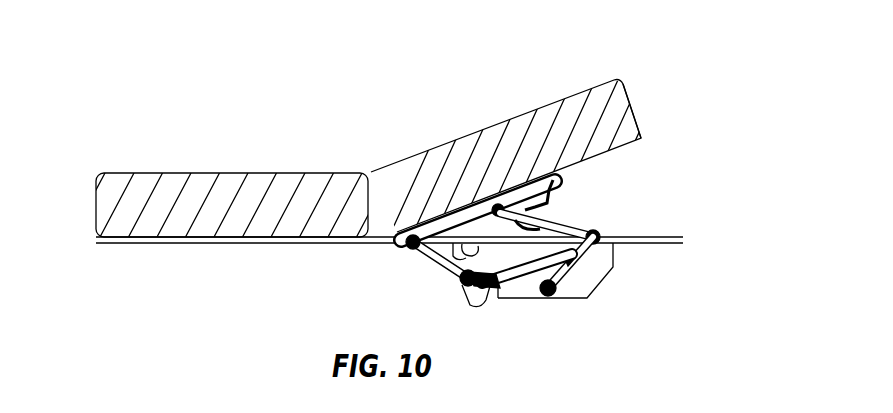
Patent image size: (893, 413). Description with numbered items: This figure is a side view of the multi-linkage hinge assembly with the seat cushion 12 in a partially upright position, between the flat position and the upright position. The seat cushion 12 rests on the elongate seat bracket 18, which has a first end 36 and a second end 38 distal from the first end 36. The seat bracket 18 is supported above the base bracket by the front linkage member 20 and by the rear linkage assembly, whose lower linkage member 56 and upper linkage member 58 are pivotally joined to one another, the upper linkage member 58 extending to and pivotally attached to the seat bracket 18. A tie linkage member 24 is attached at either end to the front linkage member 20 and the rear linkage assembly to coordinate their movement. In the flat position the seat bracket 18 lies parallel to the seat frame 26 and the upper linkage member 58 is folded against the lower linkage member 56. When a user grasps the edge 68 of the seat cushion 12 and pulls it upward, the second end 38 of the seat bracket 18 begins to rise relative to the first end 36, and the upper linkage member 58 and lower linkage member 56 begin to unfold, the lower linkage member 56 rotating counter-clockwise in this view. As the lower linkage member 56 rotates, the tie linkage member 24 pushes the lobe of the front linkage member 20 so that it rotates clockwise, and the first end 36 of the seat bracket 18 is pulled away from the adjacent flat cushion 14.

The seat cushion 12 is at (518, 117).
The adjacent flat cushion 14 is at (203, 172).
The seat bracket 18 is at (468, 203).
The front linkage member 20 is at (439, 266).
The tie linkage member 24 is at (522, 284).
The seat frame 26 is at (188, 244).
The first end 36 is at (410, 250).
The second end 38 is at (553, 184).
The lower linkage member 56 is at (578, 262).
The upper linkage member 58 is at (574, 228).
The edge 68 is at (634, 118).